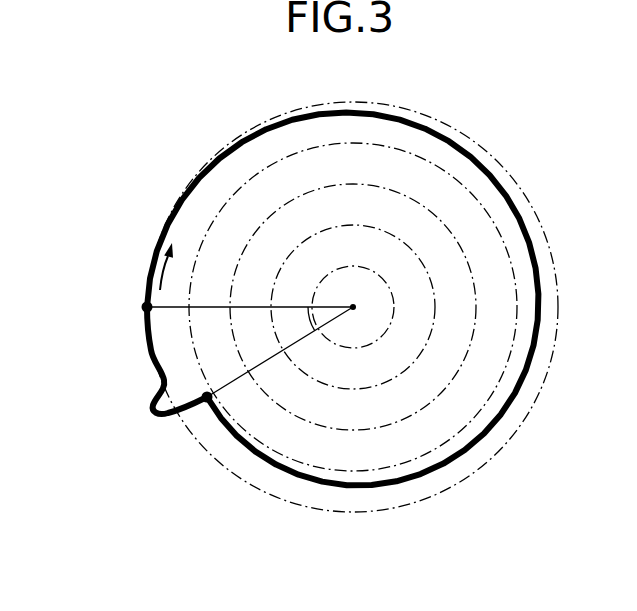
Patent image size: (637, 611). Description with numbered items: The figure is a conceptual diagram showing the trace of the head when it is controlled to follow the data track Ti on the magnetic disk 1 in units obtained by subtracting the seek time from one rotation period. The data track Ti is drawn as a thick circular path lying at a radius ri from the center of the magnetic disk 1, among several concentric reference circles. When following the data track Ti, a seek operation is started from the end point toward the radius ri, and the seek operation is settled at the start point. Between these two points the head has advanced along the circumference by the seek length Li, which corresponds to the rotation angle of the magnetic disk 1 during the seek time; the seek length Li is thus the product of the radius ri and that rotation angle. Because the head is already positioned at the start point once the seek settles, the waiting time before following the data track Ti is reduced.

The magnetic disk 1 is at (102, 103).
The data track Ti is at (335, 486).
The seek length Li is at (121, 364).
The radius ri is at (250, 290).